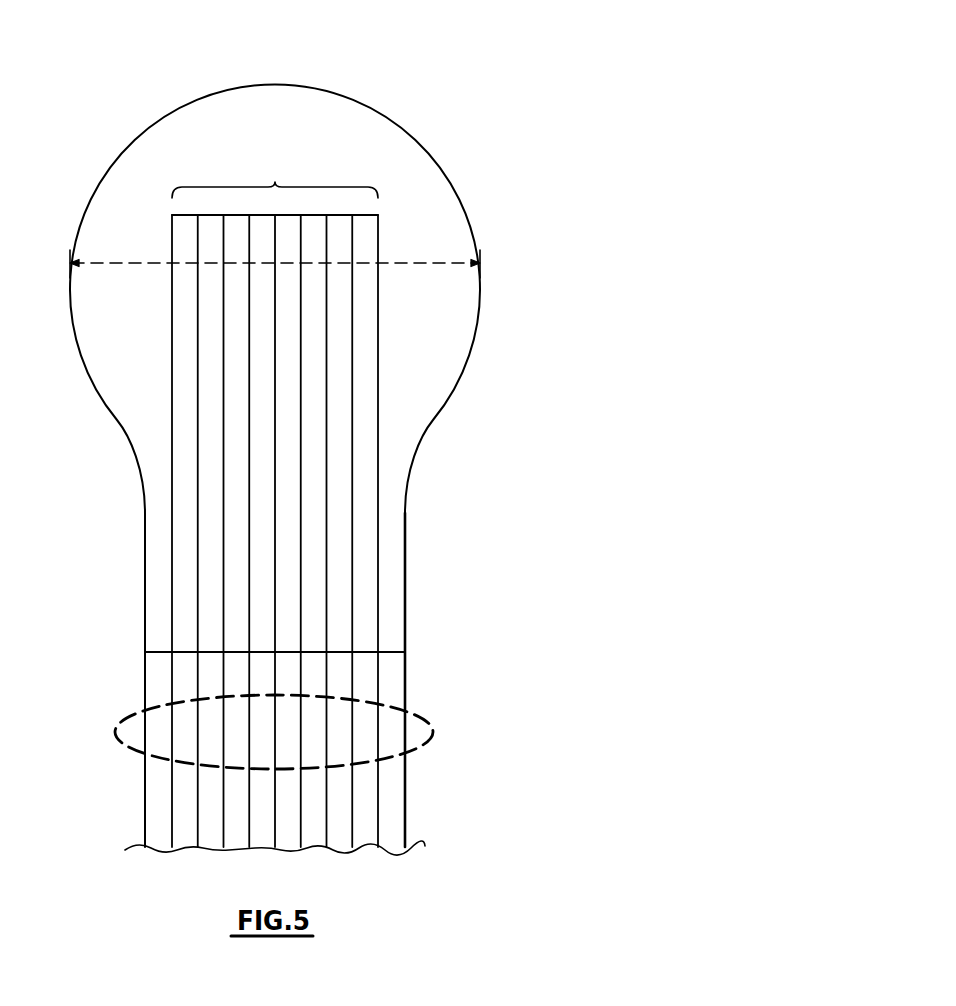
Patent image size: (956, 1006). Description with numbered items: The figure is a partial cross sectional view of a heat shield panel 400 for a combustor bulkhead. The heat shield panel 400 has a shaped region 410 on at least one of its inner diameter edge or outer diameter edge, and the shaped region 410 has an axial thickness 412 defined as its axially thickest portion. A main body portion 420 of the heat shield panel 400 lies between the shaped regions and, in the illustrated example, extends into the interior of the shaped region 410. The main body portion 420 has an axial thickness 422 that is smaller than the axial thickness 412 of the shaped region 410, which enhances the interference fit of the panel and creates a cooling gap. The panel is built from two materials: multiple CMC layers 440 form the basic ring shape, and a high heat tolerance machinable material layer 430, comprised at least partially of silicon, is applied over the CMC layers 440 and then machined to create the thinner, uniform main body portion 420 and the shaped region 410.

The heat shield panel 400 is at (543, 54).
The shaped region 410 is at (378, 113).
The axial thickness 412 is at (455, 263).
The main body portion 420 is at (435, 733).
The axial thickness 422 is at (383, 652).
The high heat tolerance machinable material layer 430 is at (455, 322).
The CMC layers 440 is at (275, 186).